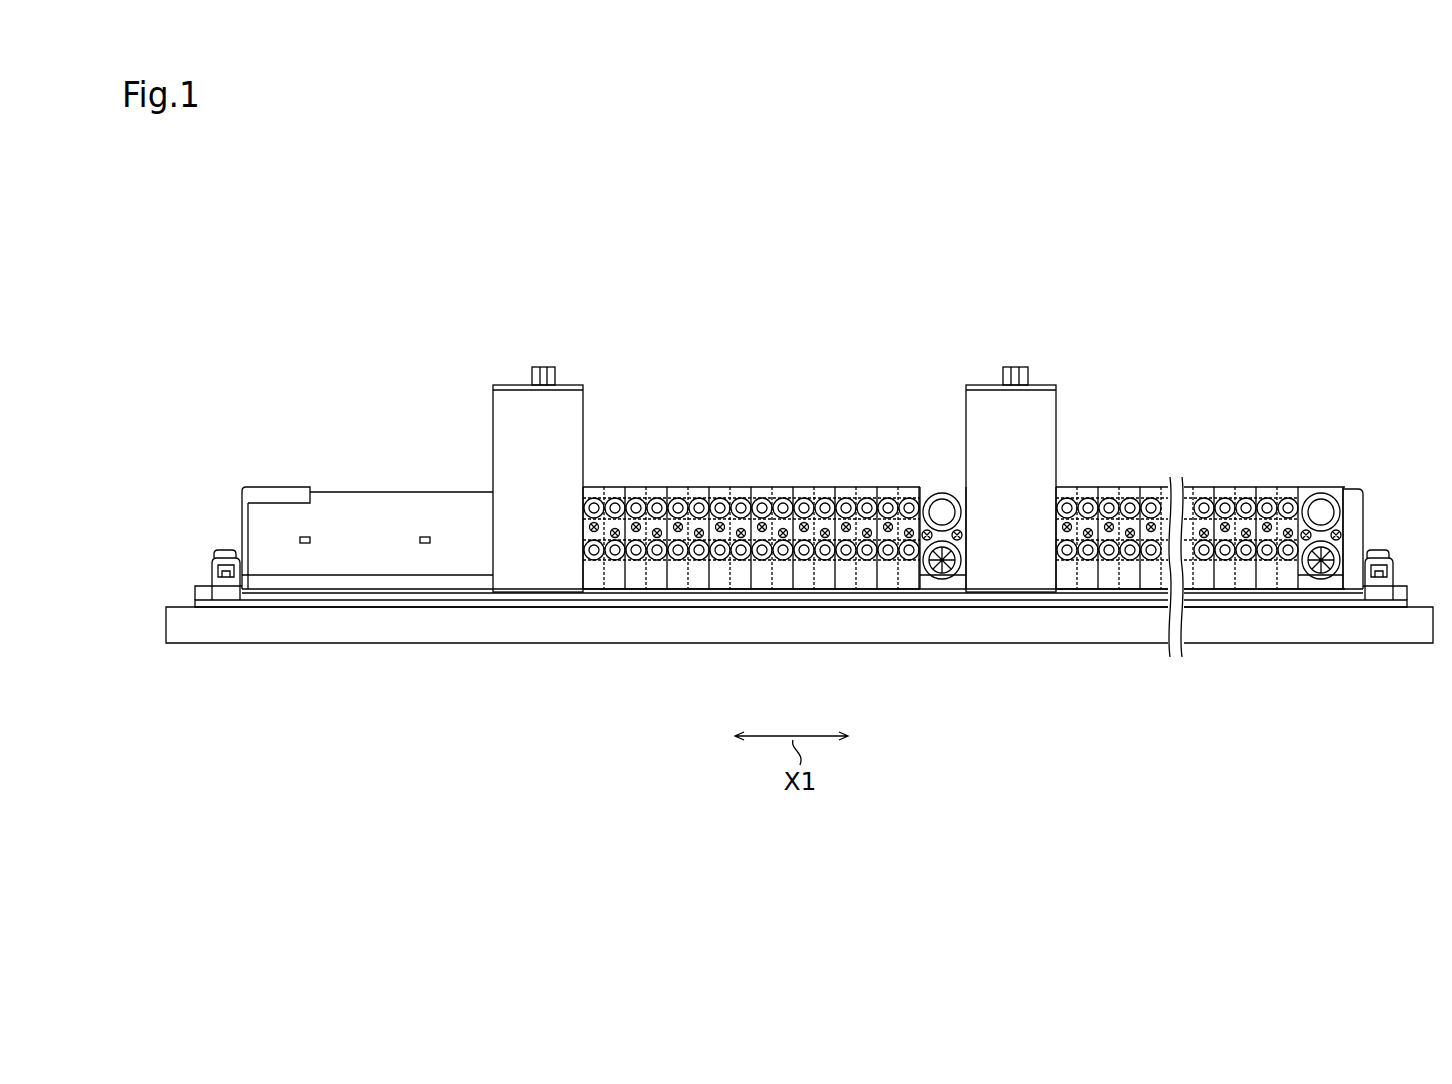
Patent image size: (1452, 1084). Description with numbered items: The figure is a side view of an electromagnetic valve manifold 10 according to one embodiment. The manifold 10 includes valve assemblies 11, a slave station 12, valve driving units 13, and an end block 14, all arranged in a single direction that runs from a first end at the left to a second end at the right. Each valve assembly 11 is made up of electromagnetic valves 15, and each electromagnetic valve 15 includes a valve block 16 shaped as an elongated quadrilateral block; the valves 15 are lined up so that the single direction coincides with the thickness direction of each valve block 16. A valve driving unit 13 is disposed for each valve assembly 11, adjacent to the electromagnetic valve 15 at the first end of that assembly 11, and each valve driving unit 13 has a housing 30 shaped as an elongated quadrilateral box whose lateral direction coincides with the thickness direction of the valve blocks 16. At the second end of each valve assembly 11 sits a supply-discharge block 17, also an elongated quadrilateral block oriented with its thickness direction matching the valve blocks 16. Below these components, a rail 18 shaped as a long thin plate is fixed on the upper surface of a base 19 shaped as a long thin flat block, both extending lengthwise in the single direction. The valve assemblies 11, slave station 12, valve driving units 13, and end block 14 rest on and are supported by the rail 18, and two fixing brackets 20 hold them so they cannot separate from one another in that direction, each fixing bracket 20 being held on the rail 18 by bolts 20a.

The electromagnetic valve manifold 10 is at (306, 388).
The valve assembly 11 is at (763, 448).
The slave station 12 is at (403, 487).
The valve driving unit 13 is at (509, 385).
The end block 14 is at (1349, 489).
The electromagnetic valve 15 is at (677, 490).
The valve block 16 is at (680, 588).
The supply-discharge block 17 is at (926, 487).
The rail 18 is at (407, 607).
The base 19 is at (498, 644).
The fixing bracket 20 is at (210, 575).
The bolt 20a is at (220, 555).
The housing 30 is at (569, 385).